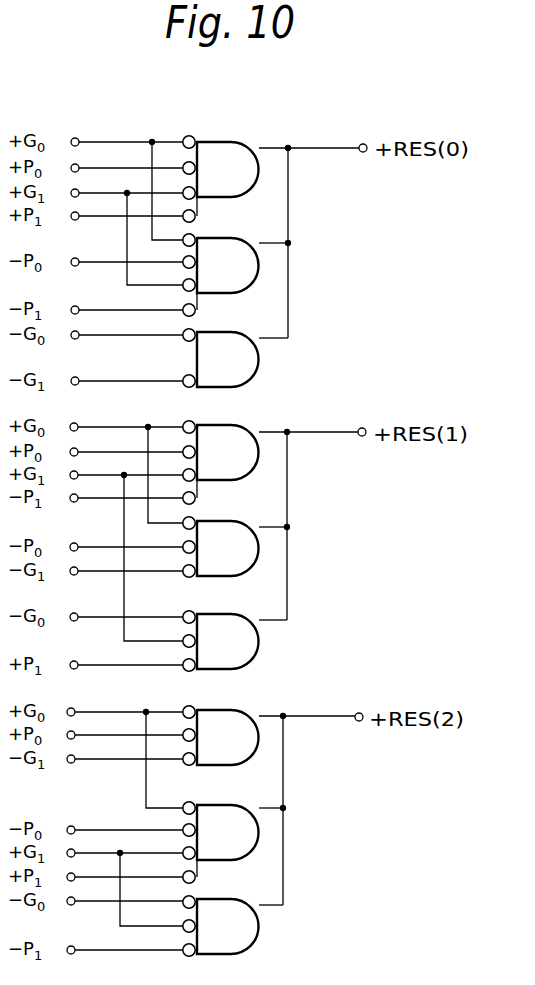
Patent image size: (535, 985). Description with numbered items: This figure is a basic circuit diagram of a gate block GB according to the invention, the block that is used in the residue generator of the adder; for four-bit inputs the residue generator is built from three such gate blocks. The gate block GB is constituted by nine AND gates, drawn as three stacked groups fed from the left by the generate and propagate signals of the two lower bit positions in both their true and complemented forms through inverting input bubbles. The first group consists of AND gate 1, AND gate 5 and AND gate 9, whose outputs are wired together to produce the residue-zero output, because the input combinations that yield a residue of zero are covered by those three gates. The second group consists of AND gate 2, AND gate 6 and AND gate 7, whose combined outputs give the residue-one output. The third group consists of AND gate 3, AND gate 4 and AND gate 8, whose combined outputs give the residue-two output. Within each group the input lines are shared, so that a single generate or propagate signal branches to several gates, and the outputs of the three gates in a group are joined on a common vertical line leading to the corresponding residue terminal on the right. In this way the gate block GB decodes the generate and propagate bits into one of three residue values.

The gate block GB is at (350, 86).
The AND gate No. 1 is at (221, 179).
The AND gate No. 2 is at (221, 462).
The AND gate No. 3 is at (221, 735).
The AND gate No. 4 is at (221, 842).
The AND gate No. 5 is at (221, 275).
The AND gate No. 6 is at (221, 547).
The AND gate No. 7 is at (221, 641).
The AND gate No. 8 is at (221, 926).
The AND gate No. 9 is at (221, 358).